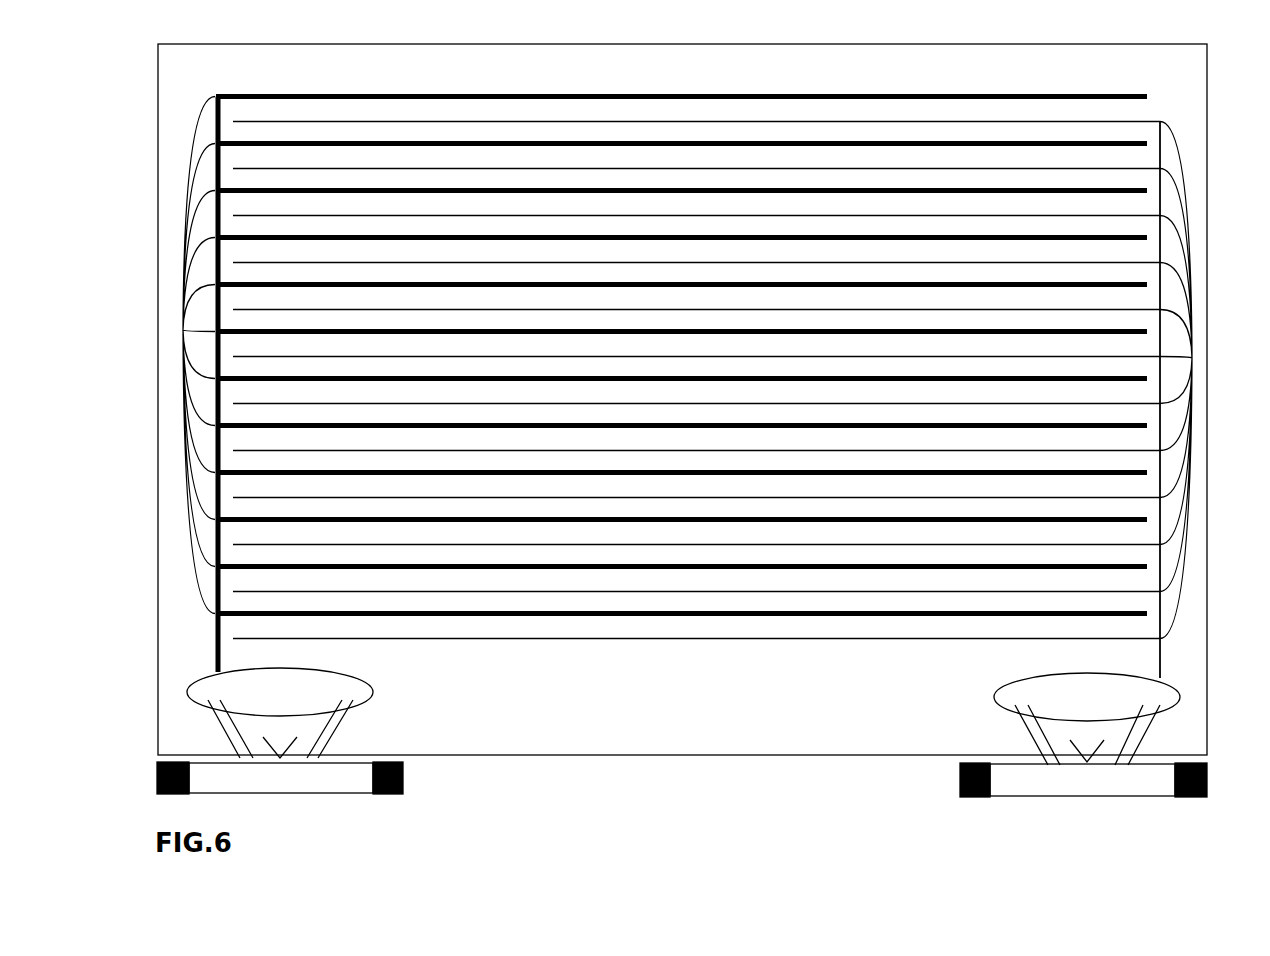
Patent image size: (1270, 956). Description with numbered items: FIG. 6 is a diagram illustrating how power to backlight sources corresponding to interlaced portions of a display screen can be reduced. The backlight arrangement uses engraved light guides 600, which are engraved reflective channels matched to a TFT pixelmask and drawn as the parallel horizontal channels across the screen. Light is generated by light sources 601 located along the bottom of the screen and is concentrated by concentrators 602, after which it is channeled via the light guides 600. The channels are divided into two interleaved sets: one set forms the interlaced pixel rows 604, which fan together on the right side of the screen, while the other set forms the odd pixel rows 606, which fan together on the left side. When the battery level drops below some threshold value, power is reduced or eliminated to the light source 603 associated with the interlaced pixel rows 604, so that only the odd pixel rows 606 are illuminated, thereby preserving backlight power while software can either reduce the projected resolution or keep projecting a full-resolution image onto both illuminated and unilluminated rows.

The lightguides 600 is at (1176, 97).
The light sources 601 is at (403, 777).
The concentrators 602 is at (373, 692).
The light source 603 is at (1083, 780).
The interlaced pixel rows 604 is at (1187, 380).
The odd pixel rows 606 is at (187, 355).